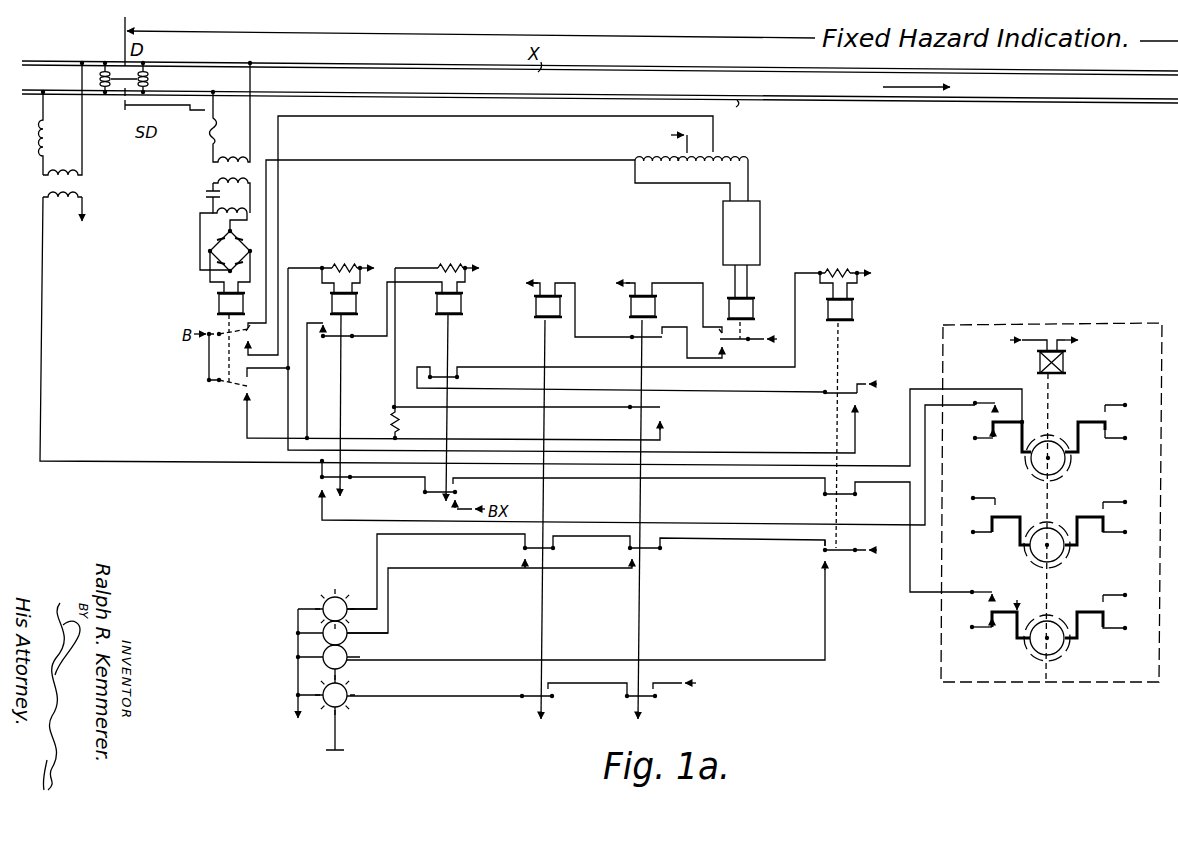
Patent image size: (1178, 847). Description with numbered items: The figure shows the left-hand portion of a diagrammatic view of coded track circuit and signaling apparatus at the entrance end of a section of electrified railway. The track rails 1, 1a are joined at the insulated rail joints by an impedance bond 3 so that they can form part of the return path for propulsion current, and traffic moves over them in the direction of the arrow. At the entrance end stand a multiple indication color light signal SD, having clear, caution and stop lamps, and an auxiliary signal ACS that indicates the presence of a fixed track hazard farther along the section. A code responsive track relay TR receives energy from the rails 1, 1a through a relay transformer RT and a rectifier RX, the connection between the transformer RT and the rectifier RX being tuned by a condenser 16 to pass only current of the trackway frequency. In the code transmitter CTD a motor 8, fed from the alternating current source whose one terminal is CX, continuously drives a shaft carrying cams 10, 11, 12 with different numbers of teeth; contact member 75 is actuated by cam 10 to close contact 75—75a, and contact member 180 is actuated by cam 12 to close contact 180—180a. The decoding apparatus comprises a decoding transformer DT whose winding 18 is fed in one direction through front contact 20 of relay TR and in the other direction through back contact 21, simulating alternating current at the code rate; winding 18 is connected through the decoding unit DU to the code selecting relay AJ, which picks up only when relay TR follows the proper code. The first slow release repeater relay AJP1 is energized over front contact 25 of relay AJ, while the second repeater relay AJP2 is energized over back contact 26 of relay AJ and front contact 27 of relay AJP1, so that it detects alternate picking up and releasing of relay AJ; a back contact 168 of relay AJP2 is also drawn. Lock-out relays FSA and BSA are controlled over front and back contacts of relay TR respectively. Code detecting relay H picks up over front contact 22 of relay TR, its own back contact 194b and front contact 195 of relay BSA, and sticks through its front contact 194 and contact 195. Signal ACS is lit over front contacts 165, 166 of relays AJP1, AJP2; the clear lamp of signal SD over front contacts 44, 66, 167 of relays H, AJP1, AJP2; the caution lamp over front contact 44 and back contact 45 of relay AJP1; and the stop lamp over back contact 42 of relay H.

The rail 1 is at (751, 57).
The rail 1a is at (746, 113).
The impedance bond 3 is at (147, 76).
The motor 8 is at (1064, 365).
The cam 10 is at (1030, 462).
The cam 11 is at (1030, 557).
The cam 12 is at (1028, 648).
The condenser 16 is at (205, 193).
The winding 18 is at (678, 165).
The front contact 20 is at (440, 250).
The back contact 21 is at (480, 235).
The front contact 22 is at (252, 378).
The front contact 25 is at (707, 340).
The back contact 26 is at (725, 351).
The front contact 27 is at (664, 343).
The back contact 42 is at (822, 571).
The front contact 44 is at (822, 545).
The back contact 45 is at (634, 562).
The front contact 66 is at (628, 541).
The contact member 75 is at (989, 444).
The code contact point 75a is at (974, 416).
The front contact 165 is at (666, 682).
The front contact 166 is at (487, 682).
The front contact 167 is at (523, 540).
The back contact of relay AJP2 168 is at (522, 562).
The contact member 180 is at (986, 634).
The code contact point 180a is at (969, 605).
The front contact 194 is at (855, 387).
The back contact 194b is at (877, 412).
The front contact 195 is at (433, 372).
The code responsive track relay TR is at (217, 305).
The relay transformer RT is at (214, 137).
The rectifier RX is at (209, 252).
The terminal CX is at (65, 157).
The lock-out relay FSA is at (331, 306).
The lock-out relay BSA is at (436, 306).
The first slow release repeater relay AJP1 is at (630, 309).
The second slow release repeater relay AJP2 is at (535, 309).
The code selecting relay AJ is at (754, 311).
The code detecting relay H is at (852, 311).
The decoding transformer DT is at (727, 149).
The decoding unit DU is at (752, 221).
The code transmitter CTD is at (1076, 332).
The multiple indication traffic controlling signal SD is at (338, 663).
The auxiliary signal ACS is at (346, 682).